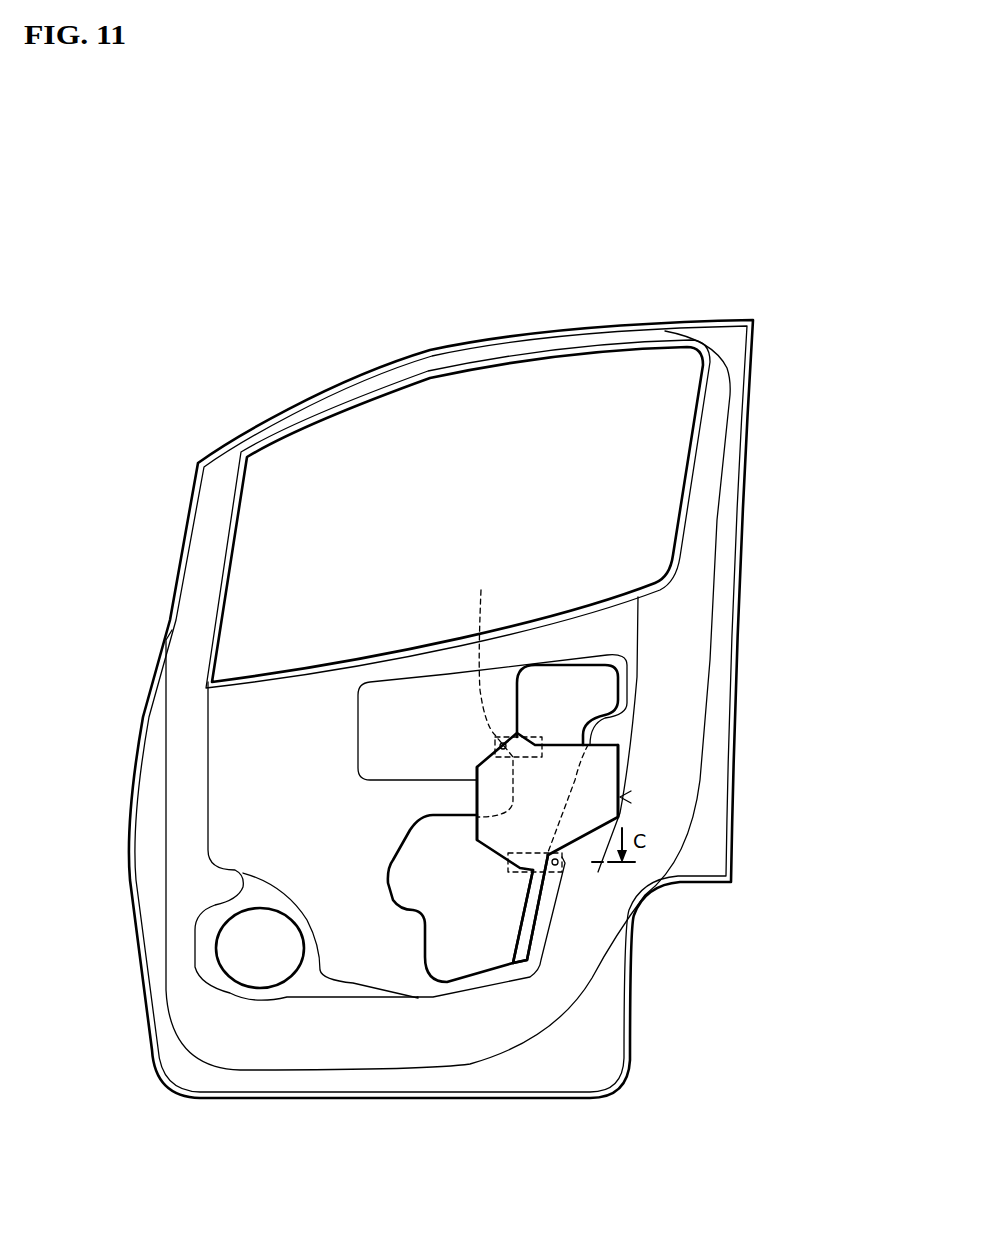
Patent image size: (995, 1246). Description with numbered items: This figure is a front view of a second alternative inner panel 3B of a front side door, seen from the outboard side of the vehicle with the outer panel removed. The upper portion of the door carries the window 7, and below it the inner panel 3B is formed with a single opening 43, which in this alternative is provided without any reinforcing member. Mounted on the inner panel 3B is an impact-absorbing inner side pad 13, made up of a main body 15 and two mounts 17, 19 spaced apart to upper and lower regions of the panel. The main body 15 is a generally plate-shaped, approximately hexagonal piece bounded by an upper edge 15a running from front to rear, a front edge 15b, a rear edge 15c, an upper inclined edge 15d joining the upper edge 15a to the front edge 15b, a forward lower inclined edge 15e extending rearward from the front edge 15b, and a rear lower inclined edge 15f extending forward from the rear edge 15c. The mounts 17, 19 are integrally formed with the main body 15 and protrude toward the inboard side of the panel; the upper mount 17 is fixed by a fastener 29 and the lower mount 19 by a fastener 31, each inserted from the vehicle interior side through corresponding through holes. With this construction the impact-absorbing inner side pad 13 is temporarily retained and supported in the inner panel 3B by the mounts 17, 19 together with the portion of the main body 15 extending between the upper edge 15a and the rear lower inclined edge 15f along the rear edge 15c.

The inner panel 3B is at (742, 530).
The window 7 is at (498, 365).
The impact-absorbing inner side pad 13 is at (620, 797).
The main body 15 is at (597, 813).
The upper edge 15a is at (570, 738).
The front edge 15b is at (477, 790).
The rear edge 15c is at (620, 780).
The upper inclined edge 15d is at (477, 757).
The forward lower inclined edge 15e is at (502, 857).
The rear lower inclined edge 15f is at (577, 852).
The mount 17 is at (489, 692).
The mount 19 is at (553, 880).
The fastener 29 is at (498, 742).
The fastener 31 is at (562, 864).
The single opening 43 is at (527, 918).